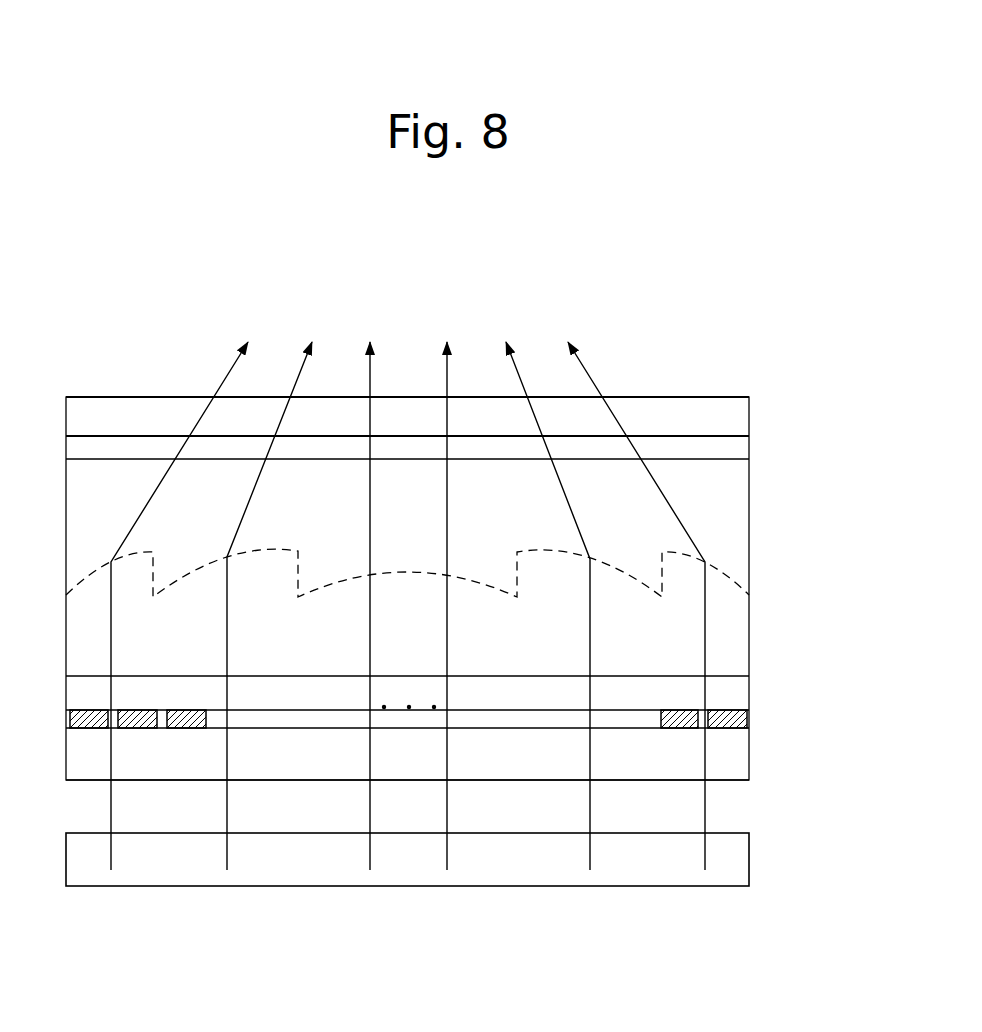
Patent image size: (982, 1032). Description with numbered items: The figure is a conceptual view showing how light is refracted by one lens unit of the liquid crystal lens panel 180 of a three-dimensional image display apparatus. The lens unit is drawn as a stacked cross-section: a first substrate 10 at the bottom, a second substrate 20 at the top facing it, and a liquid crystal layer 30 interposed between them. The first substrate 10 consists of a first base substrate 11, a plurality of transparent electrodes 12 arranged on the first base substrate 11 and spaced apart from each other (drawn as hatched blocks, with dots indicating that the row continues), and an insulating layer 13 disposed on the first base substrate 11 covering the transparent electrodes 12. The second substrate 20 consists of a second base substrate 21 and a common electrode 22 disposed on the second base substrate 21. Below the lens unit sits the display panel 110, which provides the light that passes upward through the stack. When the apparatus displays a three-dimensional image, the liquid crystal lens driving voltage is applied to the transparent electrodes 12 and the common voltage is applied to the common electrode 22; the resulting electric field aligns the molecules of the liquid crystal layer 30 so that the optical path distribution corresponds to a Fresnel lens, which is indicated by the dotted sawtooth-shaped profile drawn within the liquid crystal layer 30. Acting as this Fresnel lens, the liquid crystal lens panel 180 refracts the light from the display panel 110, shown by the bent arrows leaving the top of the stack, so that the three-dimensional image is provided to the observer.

The liquid crystal lens panel 180 is at (706, 339).
The second substrate 20 is at (817, 396).
The second base substrate 21 is at (749, 407).
The common electrode 22 is at (749, 452).
The liquid crystal layer 30 is at (749, 568).
The first substrate 10 is at (817, 676).
The insulating layer 13 is at (749, 687).
The transparent electrodes 12 is at (735, 716).
The first base substrate 11 is at (749, 749).
The display panel 110 is at (749, 864).